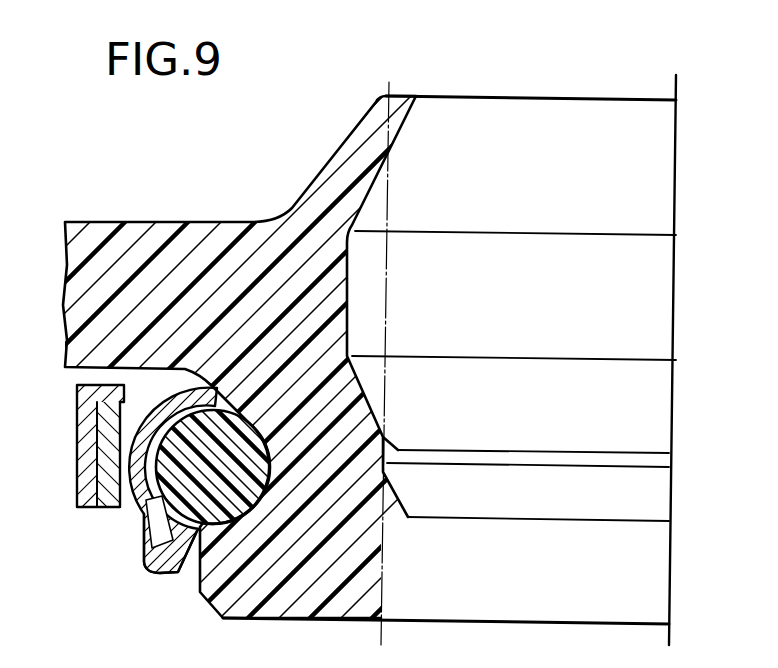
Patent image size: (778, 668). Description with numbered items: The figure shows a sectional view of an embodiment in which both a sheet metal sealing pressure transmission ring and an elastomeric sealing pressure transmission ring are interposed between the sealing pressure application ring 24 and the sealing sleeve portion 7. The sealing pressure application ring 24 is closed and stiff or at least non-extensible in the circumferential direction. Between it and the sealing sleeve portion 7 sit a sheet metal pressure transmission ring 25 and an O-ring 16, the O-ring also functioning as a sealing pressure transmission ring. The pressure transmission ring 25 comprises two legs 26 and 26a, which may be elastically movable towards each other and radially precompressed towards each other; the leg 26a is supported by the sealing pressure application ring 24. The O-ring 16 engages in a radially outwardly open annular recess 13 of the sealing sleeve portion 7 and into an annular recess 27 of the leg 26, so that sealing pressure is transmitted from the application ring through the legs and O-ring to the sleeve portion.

The sealing sleeve portion 7 is at (232, 564).
The radially outwardly open annular recess 13 is at (269, 442).
The O-ring 16 is at (245, 497).
The sealing pressure application ring 24 is at (78, 487).
The sheet metal pressure transmission ring 25 is at (123, 547).
The leg 26 is at (150, 520).
The leg 26a is at (130, 503).
The annular recess 27 is at (147, 437).